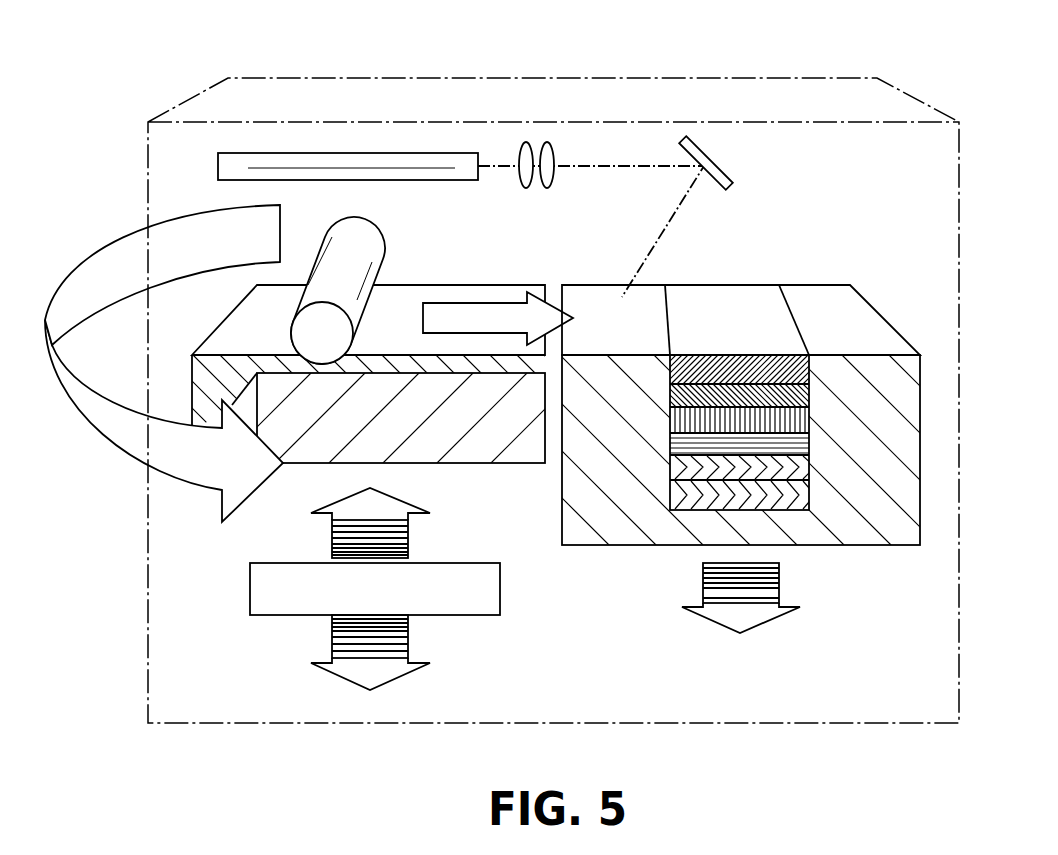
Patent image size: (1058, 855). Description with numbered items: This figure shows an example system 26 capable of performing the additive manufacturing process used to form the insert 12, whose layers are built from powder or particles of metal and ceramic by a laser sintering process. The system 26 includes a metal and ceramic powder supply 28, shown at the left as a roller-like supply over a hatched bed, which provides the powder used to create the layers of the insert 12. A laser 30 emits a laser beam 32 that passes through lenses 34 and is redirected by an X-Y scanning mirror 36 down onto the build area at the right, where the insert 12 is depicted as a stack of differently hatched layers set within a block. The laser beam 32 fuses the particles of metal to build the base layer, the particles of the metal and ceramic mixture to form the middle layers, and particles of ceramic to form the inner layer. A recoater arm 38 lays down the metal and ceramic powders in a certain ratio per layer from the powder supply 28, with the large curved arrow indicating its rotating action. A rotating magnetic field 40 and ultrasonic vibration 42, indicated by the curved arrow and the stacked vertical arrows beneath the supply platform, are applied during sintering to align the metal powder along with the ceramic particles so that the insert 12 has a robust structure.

The insert 12 is at (785, 342).
The system 26 is at (504, 366).
The metal and ceramic powder supply 28 is at (336, 233).
The laser 30 is at (352, 153).
The laser beam 32 is at (603, 157).
The lenses 34 is at (550, 143).
The X-Y scanning mirror 36 is at (713, 153).
The recoater arm 38 is at (163, 217).
The rotating magnetic field 40 is at (77, 412).
The ultrasonic vibration 42 is at (408, 634).